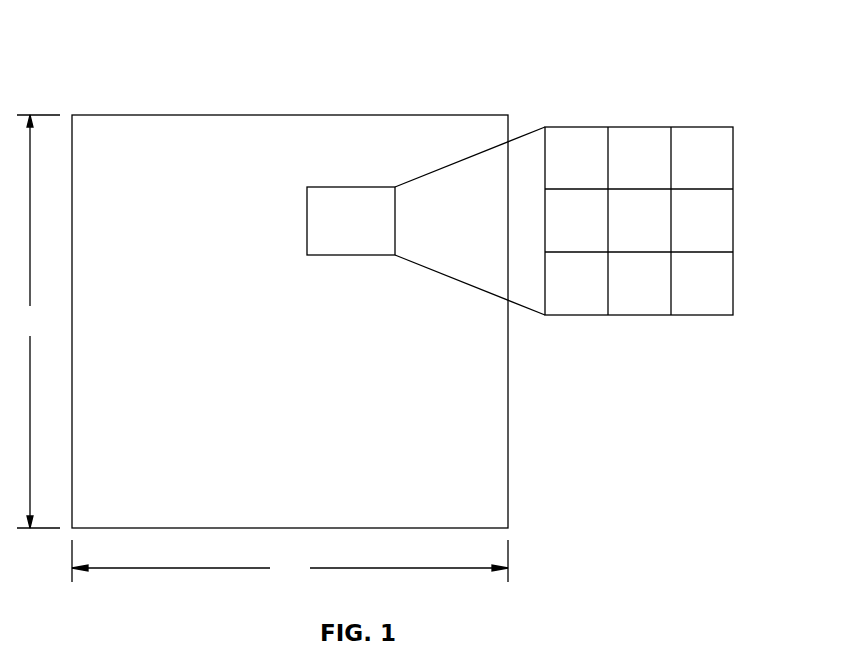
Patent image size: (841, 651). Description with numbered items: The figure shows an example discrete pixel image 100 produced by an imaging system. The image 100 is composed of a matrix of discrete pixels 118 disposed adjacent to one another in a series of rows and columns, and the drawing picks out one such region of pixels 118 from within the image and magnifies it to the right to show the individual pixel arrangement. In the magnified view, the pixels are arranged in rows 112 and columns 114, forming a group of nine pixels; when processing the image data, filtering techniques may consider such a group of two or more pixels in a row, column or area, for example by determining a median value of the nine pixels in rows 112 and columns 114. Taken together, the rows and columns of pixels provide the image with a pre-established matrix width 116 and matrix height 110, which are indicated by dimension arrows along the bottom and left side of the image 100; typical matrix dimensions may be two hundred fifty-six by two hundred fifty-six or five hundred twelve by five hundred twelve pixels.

The discrete pixel image 100 is at (157, 114).
The matrix height 110 is at (38, 321).
The rows 112 is at (712, 290).
The columns 114 is at (684, 141).
The matrix width 116 is at (290, 561).
The discrete pixels 118 is at (350, 186).